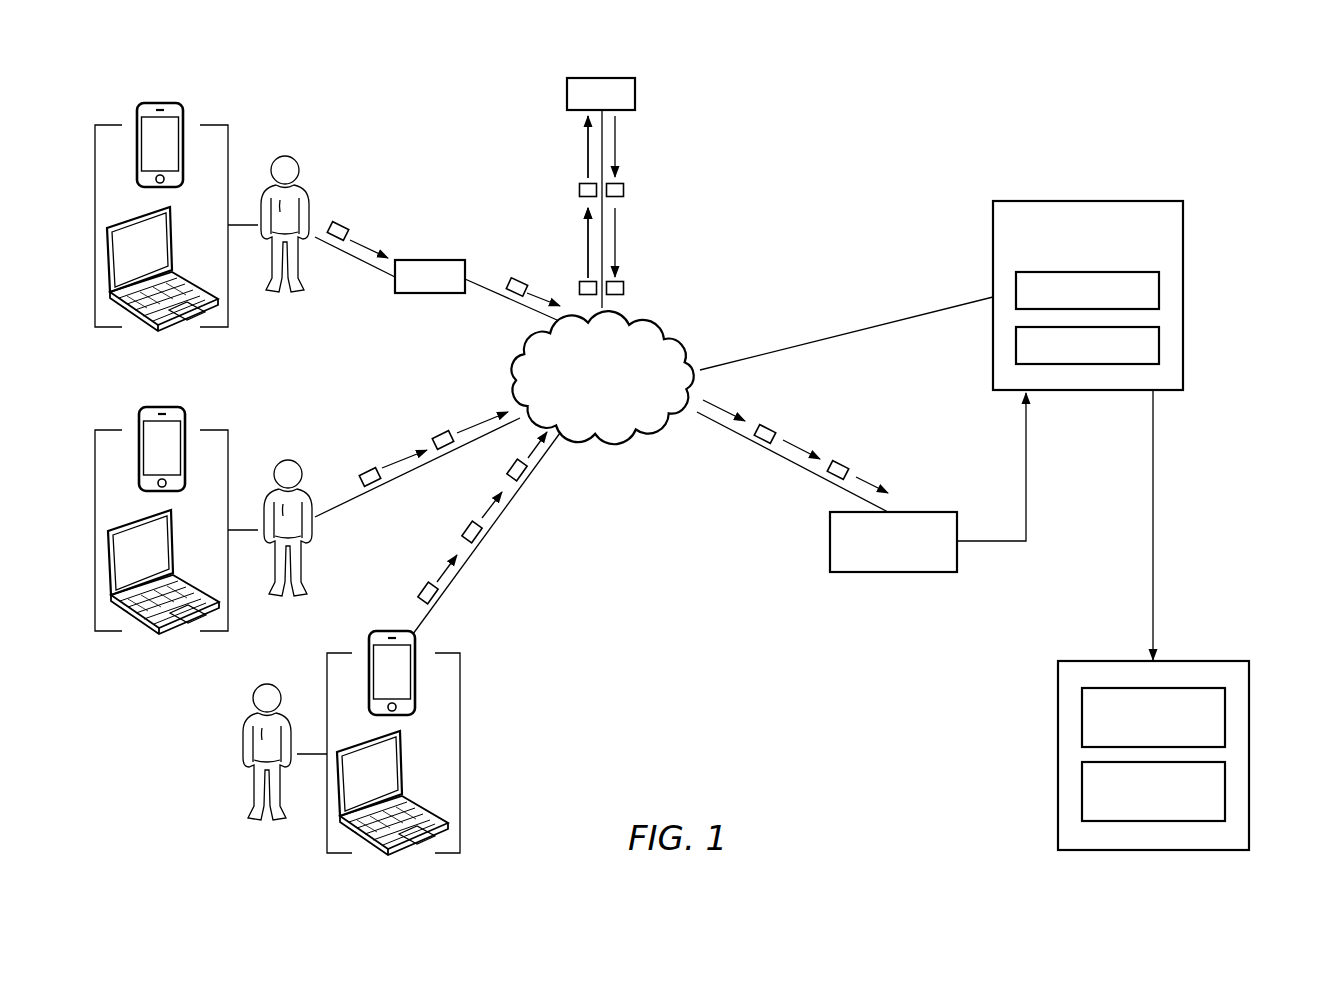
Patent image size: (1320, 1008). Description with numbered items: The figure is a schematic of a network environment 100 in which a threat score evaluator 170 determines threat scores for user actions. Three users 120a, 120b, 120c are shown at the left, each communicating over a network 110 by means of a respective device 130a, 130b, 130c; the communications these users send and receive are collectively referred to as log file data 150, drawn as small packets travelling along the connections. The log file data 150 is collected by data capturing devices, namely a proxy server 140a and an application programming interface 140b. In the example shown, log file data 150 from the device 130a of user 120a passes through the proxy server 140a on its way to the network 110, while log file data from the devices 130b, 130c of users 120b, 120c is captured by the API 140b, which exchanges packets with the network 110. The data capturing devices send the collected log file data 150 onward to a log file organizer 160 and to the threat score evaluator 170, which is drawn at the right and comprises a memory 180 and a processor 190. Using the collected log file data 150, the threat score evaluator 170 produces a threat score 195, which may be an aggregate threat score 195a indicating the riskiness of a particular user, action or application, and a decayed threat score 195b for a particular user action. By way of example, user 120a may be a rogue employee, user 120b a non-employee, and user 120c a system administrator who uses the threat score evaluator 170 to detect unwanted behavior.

The network environment 100 is at (882, 89).
The network 110 is at (590, 407).
The user 120a is at (294, 157).
The user 120b is at (297, 462).
The user 120c is at (258, 686).
The device 130a is at (221, 125).
The device 130b is at (221, 430).
The device 130c is at (461, 671).
The proxy server 140a is at (413, 293).
The application programming interface 140b is at (567, 92).
The log file data 150 is at (342, 226).
The log file organizer 160 is at (830, 538).
The threat score evaluator 170 is at (1120, 295).
The memory 180 is at (1159, 284).
The processor 190 is at (1159, 341).
The threat score 195 is at (1185, 755).
The aggregate threat score 195a is at (1225, 712).
The decayed threat score 195b is at (1225, 785).